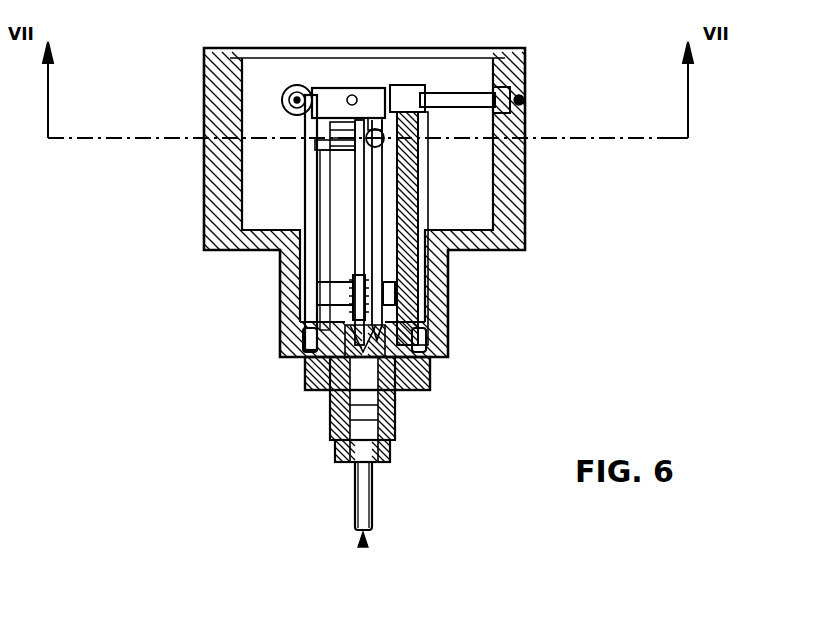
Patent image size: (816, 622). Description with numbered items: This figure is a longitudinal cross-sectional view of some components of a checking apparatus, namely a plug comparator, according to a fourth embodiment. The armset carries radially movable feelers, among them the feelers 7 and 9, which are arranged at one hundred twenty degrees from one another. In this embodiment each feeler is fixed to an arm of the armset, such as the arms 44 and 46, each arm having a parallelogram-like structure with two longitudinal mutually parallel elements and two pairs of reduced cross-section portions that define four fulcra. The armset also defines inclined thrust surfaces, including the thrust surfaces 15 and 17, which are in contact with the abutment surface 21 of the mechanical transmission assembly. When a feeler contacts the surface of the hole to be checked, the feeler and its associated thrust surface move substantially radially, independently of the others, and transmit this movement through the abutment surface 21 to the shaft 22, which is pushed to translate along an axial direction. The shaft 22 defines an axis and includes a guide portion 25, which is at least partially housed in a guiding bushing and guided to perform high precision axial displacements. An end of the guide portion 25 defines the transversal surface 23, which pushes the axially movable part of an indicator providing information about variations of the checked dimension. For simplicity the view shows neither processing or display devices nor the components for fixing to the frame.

The feeler 7 is at (283, 100).
The feeler 9 is at (453, 100).
The inclined thrust surface 15 is at (305, 178).
The inclined thrust surface 17 is at (320, 253).
The abutment surface 21 is at (378, 120).
The shaft 22 is at (367, 490).
The transversal surface 23 is at (363, 545).
The guide portion 25 is at (363, 470).
The arm 44 is at (335, 288).
The arm 46 is at (440, 283).